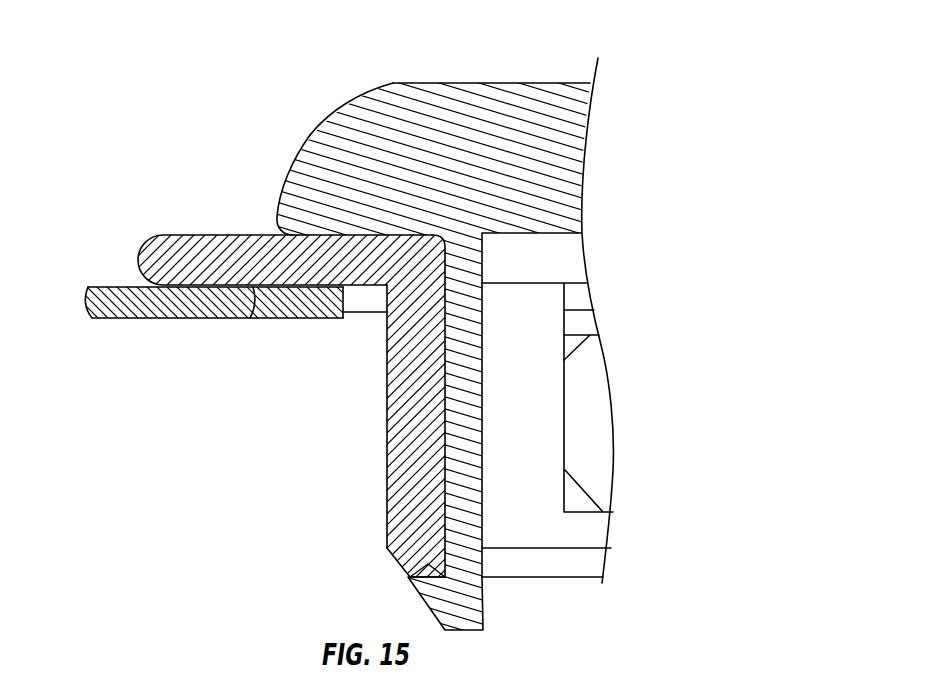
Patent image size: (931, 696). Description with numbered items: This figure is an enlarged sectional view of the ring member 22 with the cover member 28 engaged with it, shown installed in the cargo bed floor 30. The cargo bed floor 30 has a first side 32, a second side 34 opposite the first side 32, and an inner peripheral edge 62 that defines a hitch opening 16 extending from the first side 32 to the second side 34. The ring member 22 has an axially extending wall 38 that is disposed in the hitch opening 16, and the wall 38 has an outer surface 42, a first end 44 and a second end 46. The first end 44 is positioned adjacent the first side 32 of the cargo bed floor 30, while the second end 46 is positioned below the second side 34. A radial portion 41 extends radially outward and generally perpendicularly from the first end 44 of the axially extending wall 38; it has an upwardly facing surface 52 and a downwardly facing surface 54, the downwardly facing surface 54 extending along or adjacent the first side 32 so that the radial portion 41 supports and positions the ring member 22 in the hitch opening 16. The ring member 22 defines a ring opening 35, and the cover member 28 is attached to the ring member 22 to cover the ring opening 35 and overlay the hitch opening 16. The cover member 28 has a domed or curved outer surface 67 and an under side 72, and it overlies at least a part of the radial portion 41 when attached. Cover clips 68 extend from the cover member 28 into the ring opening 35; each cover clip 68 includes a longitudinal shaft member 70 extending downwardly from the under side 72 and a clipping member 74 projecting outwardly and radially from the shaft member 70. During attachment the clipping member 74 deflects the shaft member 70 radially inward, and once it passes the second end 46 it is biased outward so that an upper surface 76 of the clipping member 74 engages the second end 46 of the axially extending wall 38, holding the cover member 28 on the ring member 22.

The hitch opening 16 is at (373, 300).
The ring member 22 is at (277, 216).
The cover member 28 is at (513, 83).
The cargo bed floor 30 is at (127, 320).
The first side 32 is at (107, 285).
The second side 34 is at (190, 320).
The ring opening 35 is at (520, 289).
The axially extending wall 38 is at (407, 397).
The radial portion 41 is at (240, 240).
The outer surface 42 is at (387, 495).
The first end 44 is at (508, 233).
The second end 46 is at (557, 578).
The upwardly facing surface 52 is at (360, 232).
The downwardly facing surface 54 is at (251, 319).
The inner peripheral edge 62 is at (350, 318).
The outer surface 67 is at (332, 128).
The cover clips 68 is at (485, 390).
The longitudinal shaft member 70 is at (485, 455).
The under side 72 is at (580, 288).
The clipping member 74 is at (483, 620).
The upper surface 76 is at (410, 567).